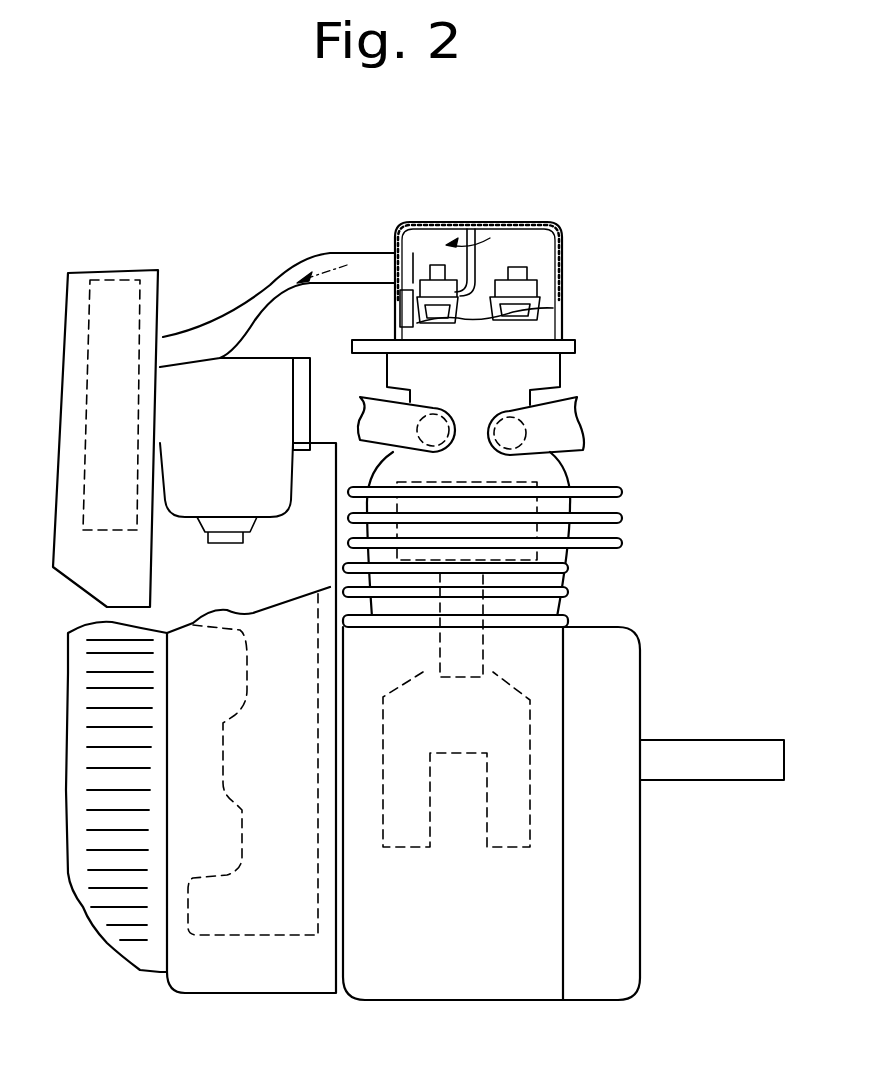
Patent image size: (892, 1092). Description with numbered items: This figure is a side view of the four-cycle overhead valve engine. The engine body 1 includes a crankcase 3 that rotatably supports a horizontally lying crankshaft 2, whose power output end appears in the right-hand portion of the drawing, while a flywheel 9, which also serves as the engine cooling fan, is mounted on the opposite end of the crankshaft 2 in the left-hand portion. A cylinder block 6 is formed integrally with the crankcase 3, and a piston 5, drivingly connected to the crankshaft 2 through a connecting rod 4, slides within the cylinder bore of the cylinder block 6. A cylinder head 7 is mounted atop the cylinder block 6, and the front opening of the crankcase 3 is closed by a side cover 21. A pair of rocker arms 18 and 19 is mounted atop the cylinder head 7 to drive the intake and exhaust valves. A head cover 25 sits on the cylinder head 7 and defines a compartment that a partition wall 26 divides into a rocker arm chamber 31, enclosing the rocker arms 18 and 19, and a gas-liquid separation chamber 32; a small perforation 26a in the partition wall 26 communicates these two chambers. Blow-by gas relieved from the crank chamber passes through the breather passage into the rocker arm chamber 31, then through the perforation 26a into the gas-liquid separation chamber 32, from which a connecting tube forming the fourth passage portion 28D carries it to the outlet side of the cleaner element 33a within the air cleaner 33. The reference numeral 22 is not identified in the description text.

The engine body 1 is at (625, 626).
The crankshaft 2 is at (698, 723).
The crankcase 3 is at (505, 975).
The connecting rod 4 is at (483, 650).
The piston 5 is at (570, 487).
The cylinder block 6 is at (597, 510).
The cylinder head 7 is at (480, 403).
The flywheel 9 is at (287, 937).
The rocker arm 18 is at (537, 308).
The rocker arm 19 is at (420, 307).
The side cover 21 is at (624, 953).
The fan housing 22 is at (297, 993).
The head cover 25 is at (543, 222).
The partition wall 26 is at (505, 222).
The small perforation 26a is at (480, 238).
The fourth passage portion 28D is at (262, 305).
The rocker arm chamber 31 is at (538, 257).
The gas-liquid separation chamber 32 is at (442, 243).
The air cleaner 33 is at (115, 272).
The cleaner element 33a is at (140, 280).